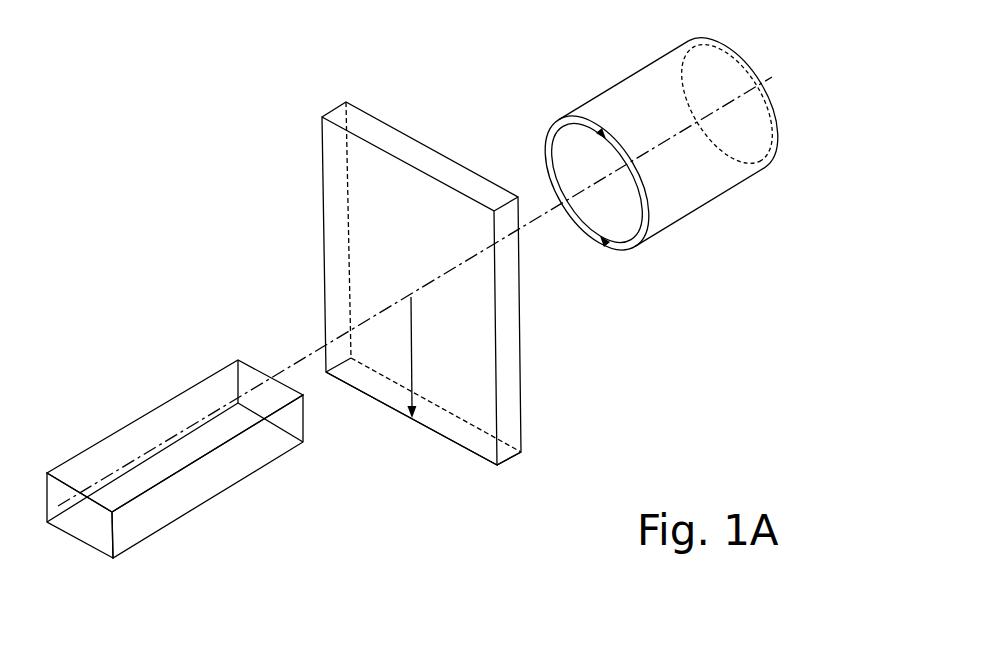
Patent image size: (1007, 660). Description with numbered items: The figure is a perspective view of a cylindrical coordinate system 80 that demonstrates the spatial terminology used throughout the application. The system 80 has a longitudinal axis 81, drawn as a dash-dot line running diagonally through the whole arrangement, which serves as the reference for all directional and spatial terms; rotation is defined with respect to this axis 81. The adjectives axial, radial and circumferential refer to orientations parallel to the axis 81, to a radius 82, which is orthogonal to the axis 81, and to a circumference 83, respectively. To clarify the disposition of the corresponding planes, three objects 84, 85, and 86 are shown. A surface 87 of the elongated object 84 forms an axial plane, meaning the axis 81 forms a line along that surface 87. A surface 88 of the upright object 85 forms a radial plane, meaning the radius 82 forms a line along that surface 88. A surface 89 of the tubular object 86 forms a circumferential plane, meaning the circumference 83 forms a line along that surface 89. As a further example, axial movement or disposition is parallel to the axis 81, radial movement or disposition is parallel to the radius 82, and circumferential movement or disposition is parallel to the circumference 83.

The cylindrical coordinate system 80 is at (272, 159).
The longitudinal axis 81 is at (622, 144).
The radius 82 is at (412, 350).
The circumference 83 is at (543, 146).
The object 84 is at (140, 543).
The object 85 is at (540, 460).
The object 86 is at (695, 219).
The surface 87 is at (132, 440).
The surface 88 is at (336, 243).
The surface 89 is at (624, 82).